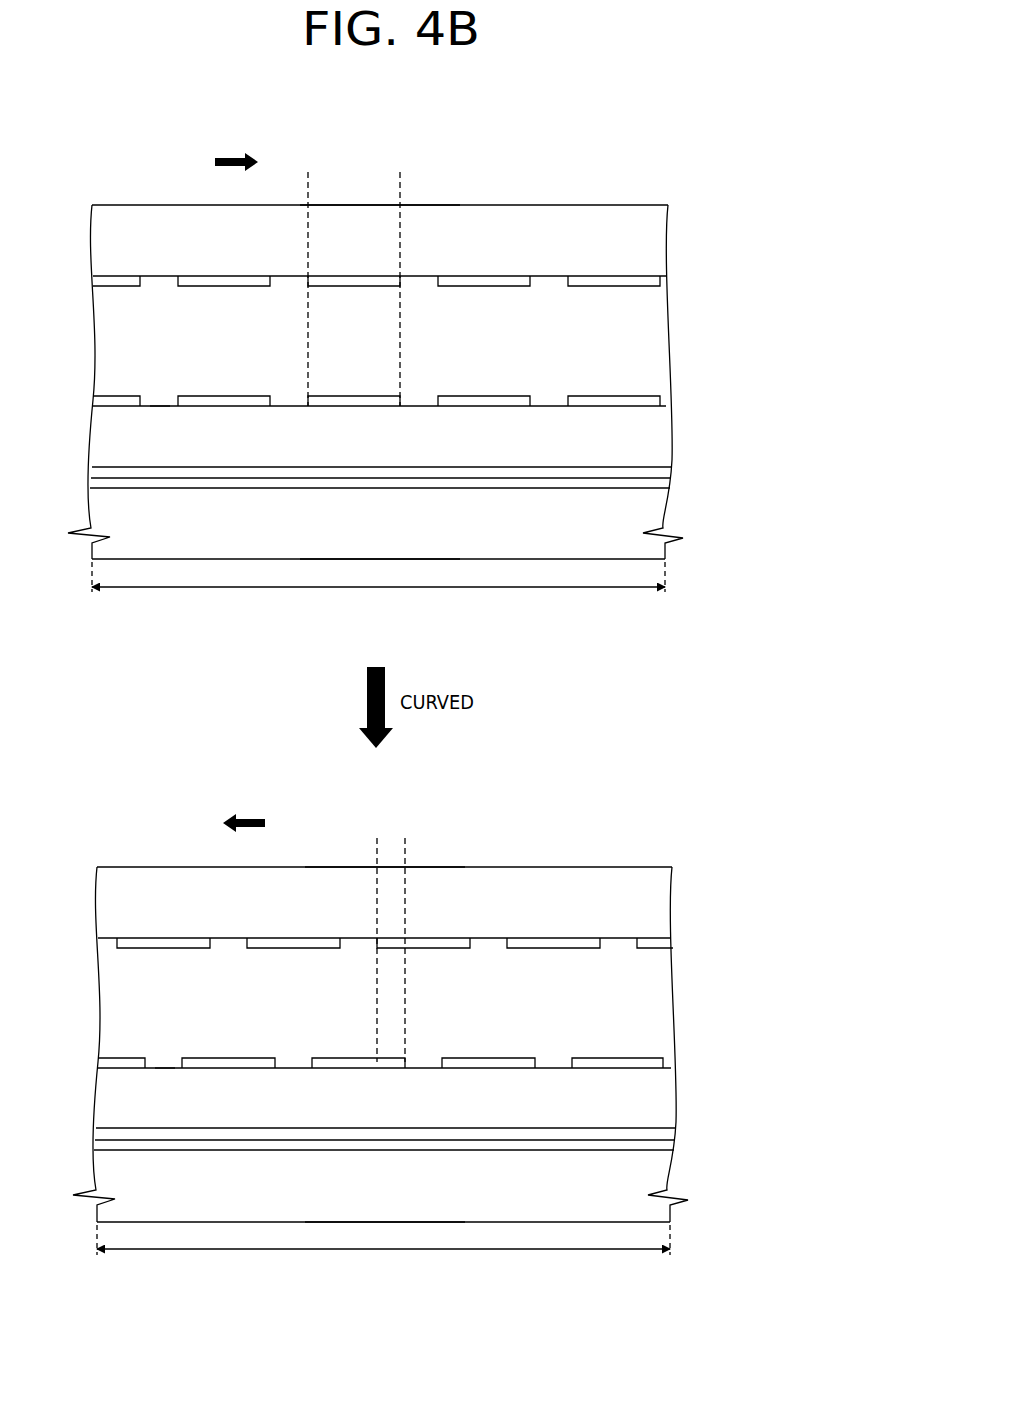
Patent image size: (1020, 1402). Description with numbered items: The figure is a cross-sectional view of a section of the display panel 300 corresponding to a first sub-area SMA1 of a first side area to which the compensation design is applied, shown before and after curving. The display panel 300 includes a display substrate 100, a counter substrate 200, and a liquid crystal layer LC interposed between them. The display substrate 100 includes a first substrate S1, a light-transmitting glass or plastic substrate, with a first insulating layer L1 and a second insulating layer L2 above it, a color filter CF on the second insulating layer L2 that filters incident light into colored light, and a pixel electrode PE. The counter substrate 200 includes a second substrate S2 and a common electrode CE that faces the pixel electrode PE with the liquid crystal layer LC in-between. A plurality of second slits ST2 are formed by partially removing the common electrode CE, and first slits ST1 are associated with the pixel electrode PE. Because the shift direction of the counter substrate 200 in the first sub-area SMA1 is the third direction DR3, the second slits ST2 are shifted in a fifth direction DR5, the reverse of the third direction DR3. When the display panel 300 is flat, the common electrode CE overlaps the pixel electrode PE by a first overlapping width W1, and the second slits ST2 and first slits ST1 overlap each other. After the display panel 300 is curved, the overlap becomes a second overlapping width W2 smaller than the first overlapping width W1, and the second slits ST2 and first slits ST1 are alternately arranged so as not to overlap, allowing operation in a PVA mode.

The display panel 300 is at (653, 170).
The counter substrate 200 is at (733, 235).
The display substrate 100 is at (733, 385).
The second substrate S2 is at (650, 246).
The common electrode CE is at (650, 282).
The liquid crystal layer LC is at (650, 343).
The pixel electrode PE is at (650, 400).
The color filter CF is at (650, 430).
The second insulating layer L2 is at (650, 465).
The first insulating layer L1 is at (650, 484).
The first substrate S1 is at (650, 520).
The first slits ST1 is at (160, 394).
The second slits ST2 is at (160, 289).
The first overlapping width W1 is at (400, 183).
The second overlapping width W2 is at (430, 845).
The fifth direction DR5 is at (236, 148).
The third direction DR3 is at (244, 809).
The first sub-area SMA1 is at (381, 921).